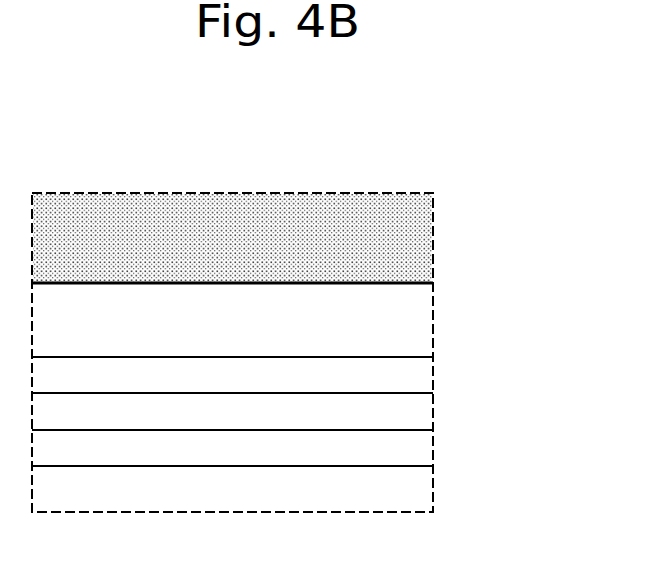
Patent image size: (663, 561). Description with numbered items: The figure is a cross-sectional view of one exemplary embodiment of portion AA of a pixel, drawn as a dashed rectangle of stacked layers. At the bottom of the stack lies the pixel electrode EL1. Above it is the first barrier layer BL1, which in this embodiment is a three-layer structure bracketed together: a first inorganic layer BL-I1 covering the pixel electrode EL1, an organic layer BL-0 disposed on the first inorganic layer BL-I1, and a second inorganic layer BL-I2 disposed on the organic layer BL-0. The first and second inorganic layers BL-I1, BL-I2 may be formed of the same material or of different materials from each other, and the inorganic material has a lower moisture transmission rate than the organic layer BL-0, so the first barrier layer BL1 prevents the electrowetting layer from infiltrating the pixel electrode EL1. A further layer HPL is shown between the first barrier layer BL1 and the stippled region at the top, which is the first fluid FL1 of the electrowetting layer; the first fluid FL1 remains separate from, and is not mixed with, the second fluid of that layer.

The portion AA is at (323, 190).
The first fluid FL1 is at (418, 244).
The hole transport layer HPL is at (418, 324).
The second inorganic layer BL-I2 is at (418, 378).
The organic layer BL-0 is at (418, 415).
The first inorganic layer BL-I1 is at (418, 450).
The pixel electrode EL1 is at (418, 498).
The first barrier layer BL1 is at (533, 367).